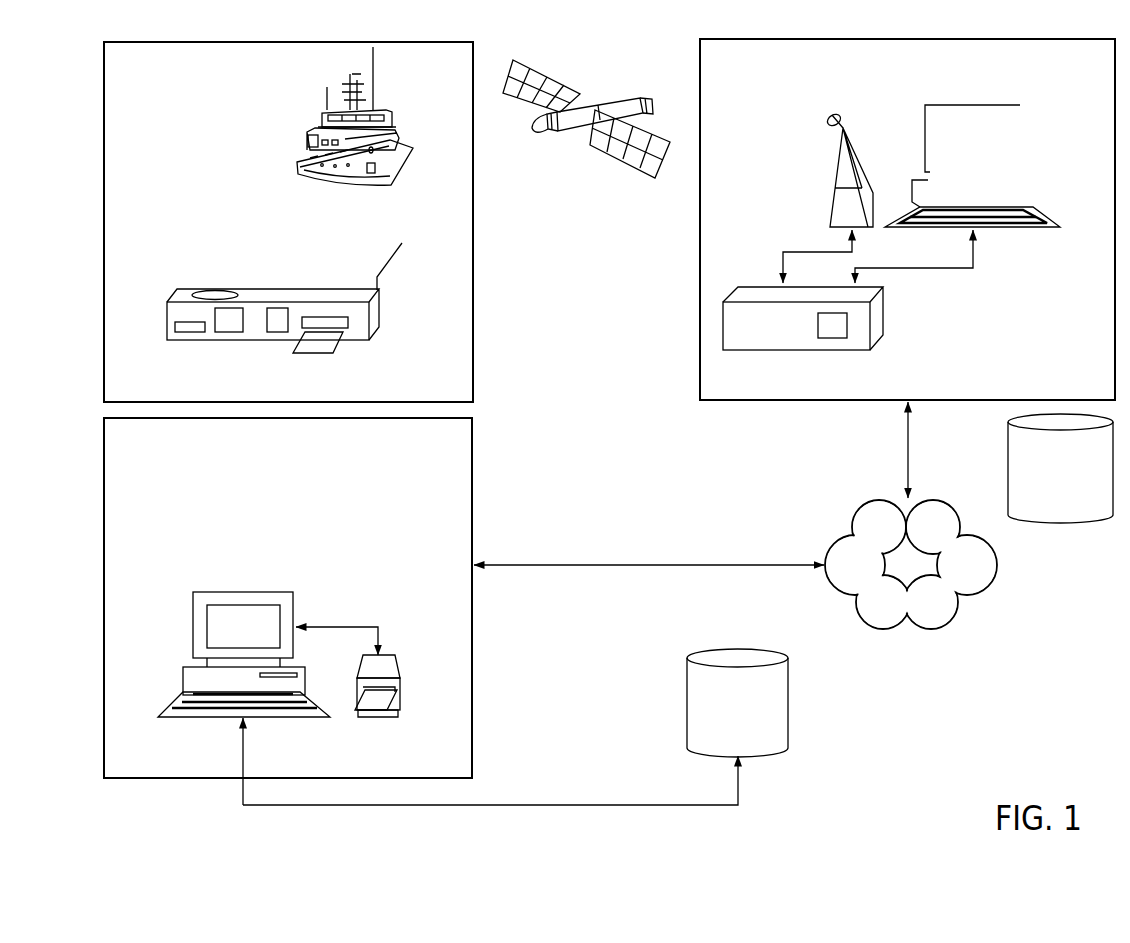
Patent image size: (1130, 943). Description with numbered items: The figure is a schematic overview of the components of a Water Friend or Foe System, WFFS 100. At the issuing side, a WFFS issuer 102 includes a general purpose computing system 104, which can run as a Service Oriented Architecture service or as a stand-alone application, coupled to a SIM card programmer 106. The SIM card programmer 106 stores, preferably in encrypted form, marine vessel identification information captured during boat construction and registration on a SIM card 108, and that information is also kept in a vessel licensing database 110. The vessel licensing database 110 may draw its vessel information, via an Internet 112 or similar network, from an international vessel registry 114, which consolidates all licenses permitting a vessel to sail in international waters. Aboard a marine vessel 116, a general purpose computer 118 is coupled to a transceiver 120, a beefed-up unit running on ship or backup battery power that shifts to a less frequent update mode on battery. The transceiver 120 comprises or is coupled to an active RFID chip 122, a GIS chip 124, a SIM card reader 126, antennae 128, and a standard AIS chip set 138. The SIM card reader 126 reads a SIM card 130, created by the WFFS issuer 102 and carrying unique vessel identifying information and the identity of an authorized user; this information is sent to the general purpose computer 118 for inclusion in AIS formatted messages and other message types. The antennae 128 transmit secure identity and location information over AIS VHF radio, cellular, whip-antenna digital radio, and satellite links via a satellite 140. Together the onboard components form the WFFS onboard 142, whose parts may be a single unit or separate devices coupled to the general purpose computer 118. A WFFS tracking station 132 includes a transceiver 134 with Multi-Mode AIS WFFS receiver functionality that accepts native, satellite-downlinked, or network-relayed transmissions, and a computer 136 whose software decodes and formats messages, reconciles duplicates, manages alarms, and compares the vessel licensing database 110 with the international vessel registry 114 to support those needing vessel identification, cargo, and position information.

The Water Friend or Foe System (WFFS) 100 is at (882, 720).
The WFFS issuer 102 is at (424, 478).
The general purpose computing system 104 is at (193, 617).
The SIM card programmer 106 is at (390, 651).
The SIM card 108 is at (373, 703).
The vessel licensing database 110 is at (788, 705).
The Internet 112 is at (923, 580).
The international vessel registry 114 is at (1057, 522).
The marine vessel 116 is at (185, 98).
The general purpose computer 118 is at (172, 287).
The transceiver 120 is at (215, 297).
The RFID chip 122 is at (177, 326).
The GIS chip 124 is at (232, 328).
The SIM card reader 126 is at (322, 318).
The antennae 128 is at (384, 262).
The SIM card 130 is at (332, 343).
The WFFS tracking station 132 is at (1042, 90).
The transceiver 134 is at (755, 352).
The computer 136 is at (1033, 230).
The AIS chip set 138 is at (282, 328).
The satellite 140 is at (613, 103).
The WFFS onboard 142 is at (227, 227).